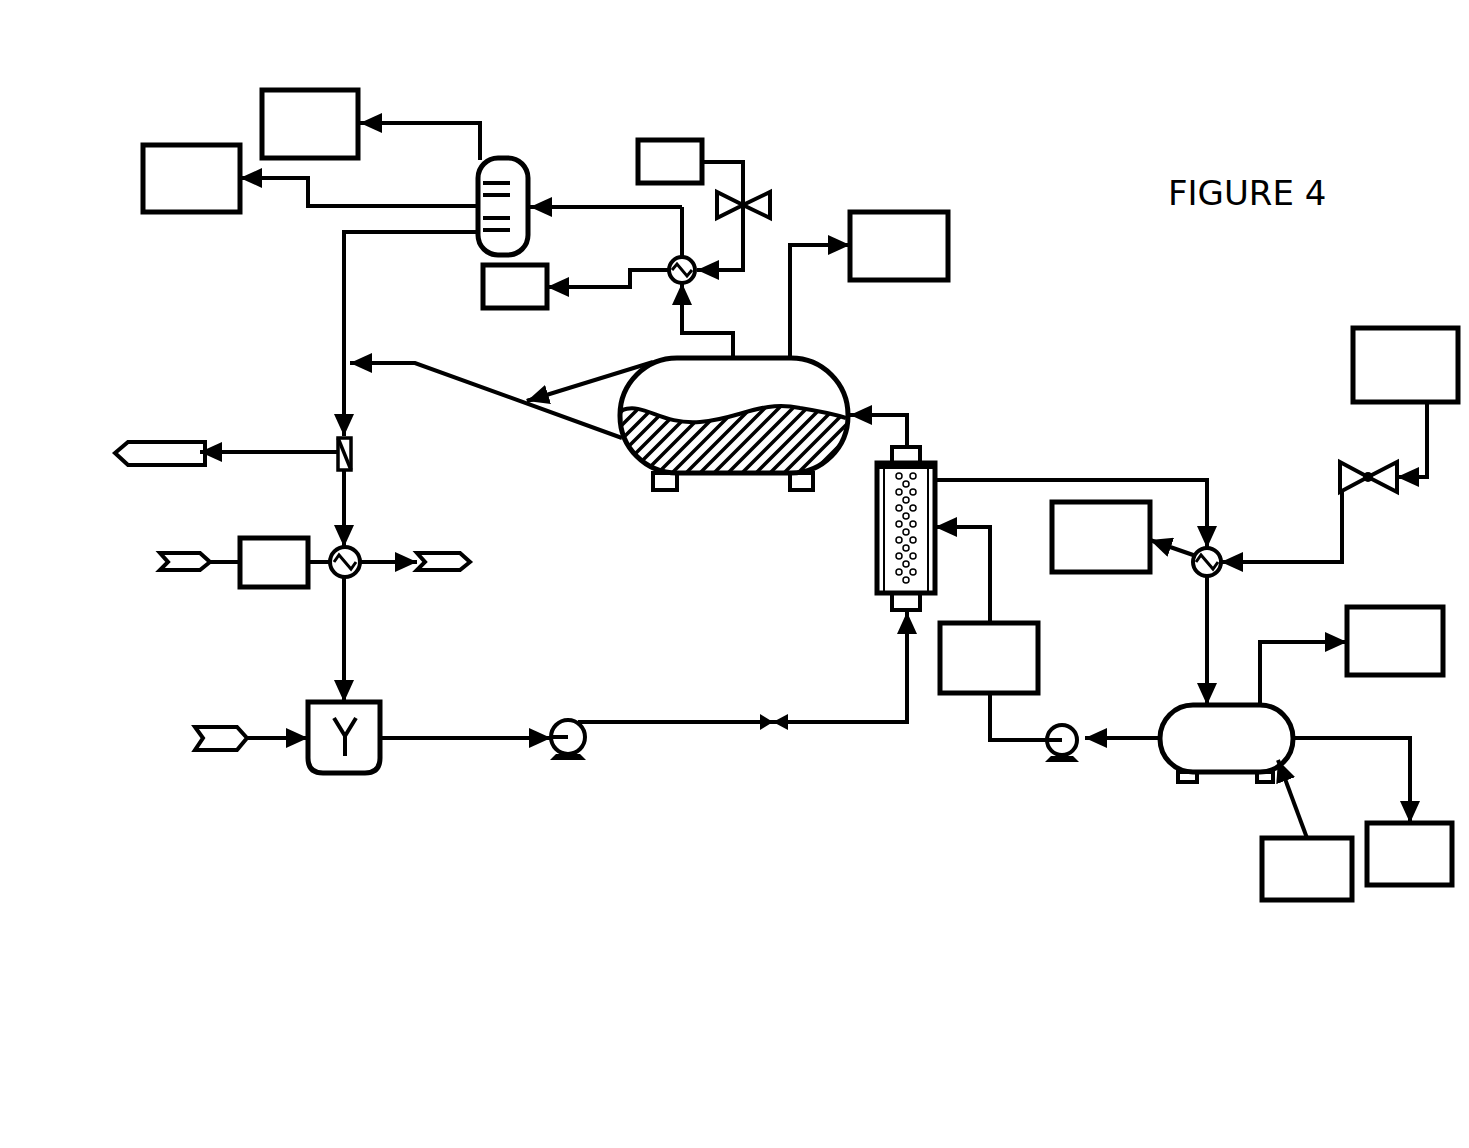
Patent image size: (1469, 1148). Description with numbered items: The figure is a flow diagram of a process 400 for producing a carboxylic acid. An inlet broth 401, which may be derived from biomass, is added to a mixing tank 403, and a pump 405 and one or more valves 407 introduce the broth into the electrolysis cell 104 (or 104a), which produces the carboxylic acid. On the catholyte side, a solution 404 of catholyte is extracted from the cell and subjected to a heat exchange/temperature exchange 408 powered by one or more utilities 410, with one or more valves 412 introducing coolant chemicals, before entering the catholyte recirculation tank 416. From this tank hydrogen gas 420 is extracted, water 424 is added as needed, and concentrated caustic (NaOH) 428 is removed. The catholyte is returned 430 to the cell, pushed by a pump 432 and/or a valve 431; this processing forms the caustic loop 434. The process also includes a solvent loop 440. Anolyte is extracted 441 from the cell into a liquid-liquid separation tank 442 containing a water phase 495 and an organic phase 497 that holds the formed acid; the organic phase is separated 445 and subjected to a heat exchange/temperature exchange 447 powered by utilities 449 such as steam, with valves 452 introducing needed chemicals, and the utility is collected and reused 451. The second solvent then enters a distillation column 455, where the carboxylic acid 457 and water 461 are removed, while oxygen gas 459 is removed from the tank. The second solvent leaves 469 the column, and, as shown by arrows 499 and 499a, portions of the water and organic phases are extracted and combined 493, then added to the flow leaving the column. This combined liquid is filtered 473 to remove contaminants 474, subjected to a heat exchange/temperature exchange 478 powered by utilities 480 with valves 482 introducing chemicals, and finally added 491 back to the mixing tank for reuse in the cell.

The process 400 is at (1003, 182).
The inlet broth 401 is at (218, 752).
The mixing tank 403 is at (338, 776).
The pump 405 is at (568, 762).
The valve 407 is at (767, 730).
The electrolysis cell 104 is at (796, 545).
The electrolysis cell 104a is at (877, 527).
The solution of the catholyte 404 is at (1090, 478).
The heat exchange/temperature exchange 408 is at (1218, 548).
The utility 410 is at (1255, 450).
The valve 412 is at (1340, 462).
The catholyte recirculation tank 416 is at (1233, 772).
The hydrogen gas 420 is at (1351, 656).
The water 424 is at (1307, 830).
The caustic (NaOH) 428 is at (1372, 811).
The return of catholyte 430 is at (1152, 740).
The valve 431 is at (991, 633).
The pump 432 is at (1047, 757).
The caustic loop 434 is at (1233, 880).
The solvent loop 440 is at (272, 213).
The extraction of anolyte 441 is at (910, 425).
The liquid-liquid separation tank 442 is at (746, 425).
The separation of organic phase 445 is at (680, 332).
The heat exchange/temperature exchange reaction 447 is at (673, 262).
The utility 449 is at (670, 161).
The collected and reused utility 451 is at (576, 286).
The valve 452 is at (770, 216).
The distillation column 455 is at (517, 156).
The carboxylic acid 457 is at (310, 178).
The oxygen gas 459 is at (869, 285).
The water 461 is at (371, 125).
The flow of second solvent 469 is at (344, 258).
The filtering 473 is at (352, 467).
The contaminants 474 is at (163, 466).
The heat exchange/temperature exchange process 478 is at (357, 578).
The utility 480 is at (190, 571).
The valve 482 is at (285, 562).
The addition to mixing tank 491 is at (344, 620).
The combining 493 is at (523, 402).
The water phase 495 is at (647, 460).
The organic phase 497 is at (793, 382).
The arrow 499 is at (557, 420).
The arrow 499a is at (587, 381).